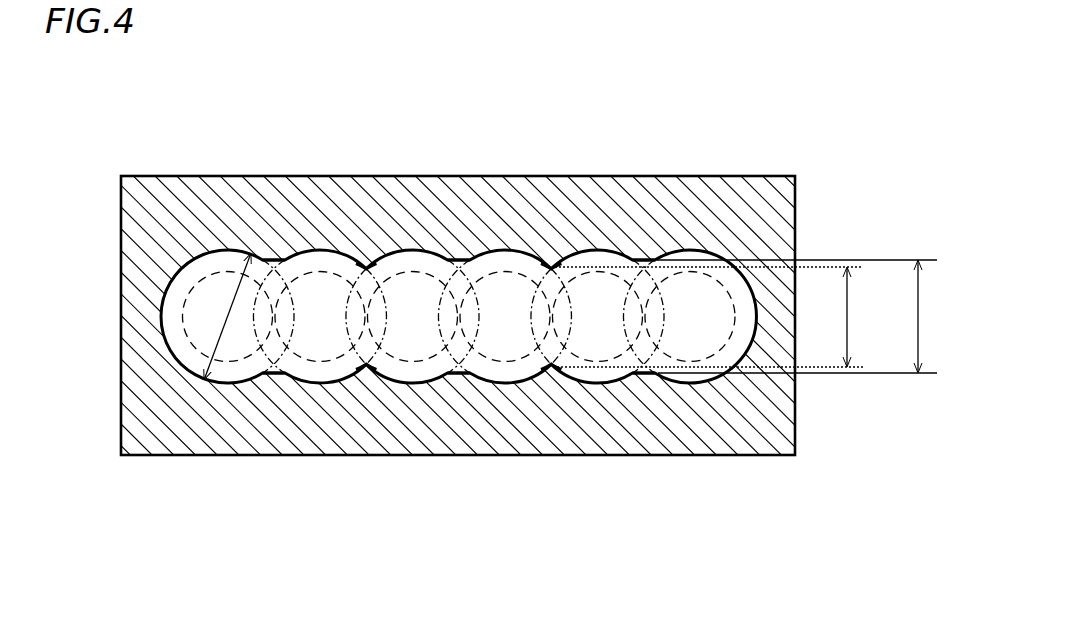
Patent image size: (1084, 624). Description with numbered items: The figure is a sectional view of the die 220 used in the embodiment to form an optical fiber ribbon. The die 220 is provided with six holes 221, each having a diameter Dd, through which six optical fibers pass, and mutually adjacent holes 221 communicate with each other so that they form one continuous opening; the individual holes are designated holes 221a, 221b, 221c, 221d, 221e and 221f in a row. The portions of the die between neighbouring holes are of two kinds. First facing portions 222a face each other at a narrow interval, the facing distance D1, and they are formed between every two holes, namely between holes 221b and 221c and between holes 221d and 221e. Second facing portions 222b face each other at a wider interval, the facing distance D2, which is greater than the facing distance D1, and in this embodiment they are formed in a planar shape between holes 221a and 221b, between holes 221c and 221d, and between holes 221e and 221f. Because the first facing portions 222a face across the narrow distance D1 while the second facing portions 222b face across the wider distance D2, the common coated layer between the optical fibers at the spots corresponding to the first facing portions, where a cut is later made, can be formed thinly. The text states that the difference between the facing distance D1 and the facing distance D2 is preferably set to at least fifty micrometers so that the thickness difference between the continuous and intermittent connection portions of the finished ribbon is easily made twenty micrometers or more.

The die 220 is at (685, 174).
The holes 221 is at (735, 543).
The hole 221a is at (233, 362).
The hole 221b is at (323, 363).
The hole 221c is at (415, 363).
The hole 221d is at (507, 363).
The hole 221e is at (597, 363).
The hole 221f is at (690, 363).
The first facing portions 222a is at (367, 267).
The second facing portions 222b is at (277, 259).
The diameter Dd is at (227, 318).
The facing distance D1 is at (722, 317).
The facing distance D2 is at (810, 316).